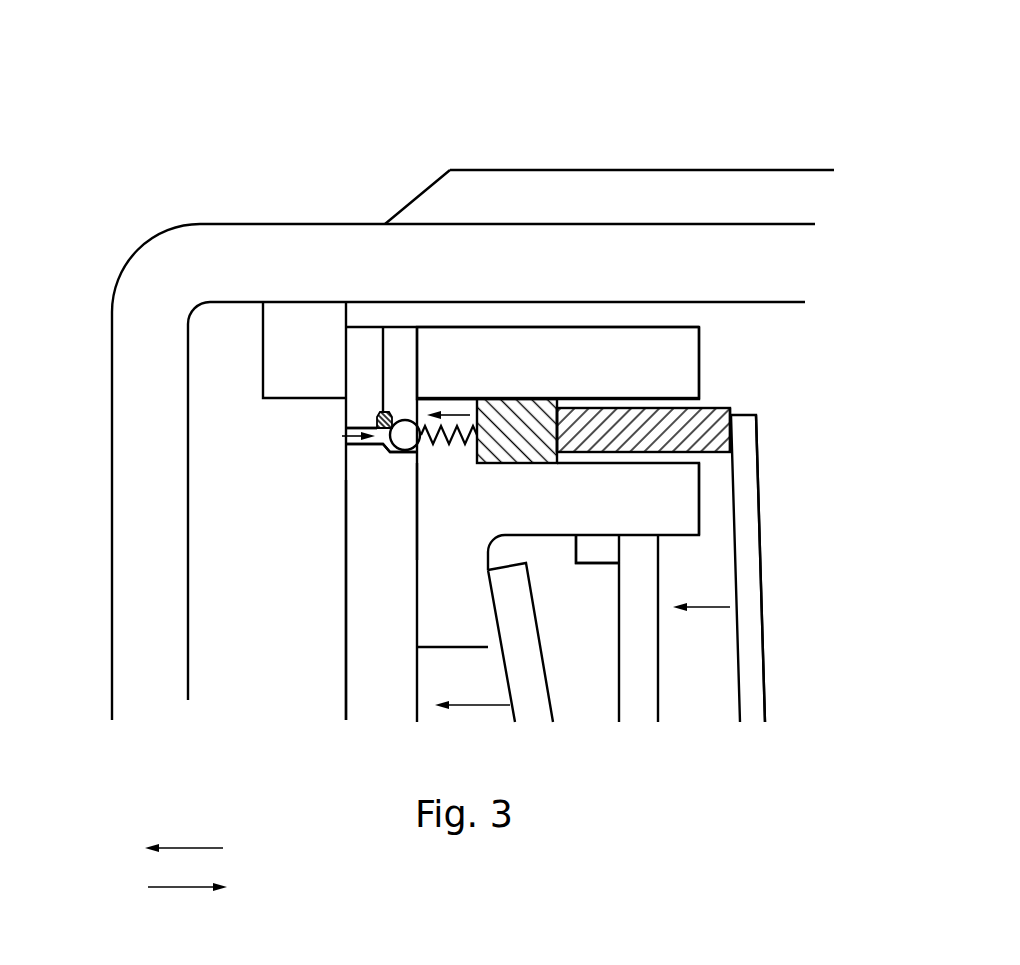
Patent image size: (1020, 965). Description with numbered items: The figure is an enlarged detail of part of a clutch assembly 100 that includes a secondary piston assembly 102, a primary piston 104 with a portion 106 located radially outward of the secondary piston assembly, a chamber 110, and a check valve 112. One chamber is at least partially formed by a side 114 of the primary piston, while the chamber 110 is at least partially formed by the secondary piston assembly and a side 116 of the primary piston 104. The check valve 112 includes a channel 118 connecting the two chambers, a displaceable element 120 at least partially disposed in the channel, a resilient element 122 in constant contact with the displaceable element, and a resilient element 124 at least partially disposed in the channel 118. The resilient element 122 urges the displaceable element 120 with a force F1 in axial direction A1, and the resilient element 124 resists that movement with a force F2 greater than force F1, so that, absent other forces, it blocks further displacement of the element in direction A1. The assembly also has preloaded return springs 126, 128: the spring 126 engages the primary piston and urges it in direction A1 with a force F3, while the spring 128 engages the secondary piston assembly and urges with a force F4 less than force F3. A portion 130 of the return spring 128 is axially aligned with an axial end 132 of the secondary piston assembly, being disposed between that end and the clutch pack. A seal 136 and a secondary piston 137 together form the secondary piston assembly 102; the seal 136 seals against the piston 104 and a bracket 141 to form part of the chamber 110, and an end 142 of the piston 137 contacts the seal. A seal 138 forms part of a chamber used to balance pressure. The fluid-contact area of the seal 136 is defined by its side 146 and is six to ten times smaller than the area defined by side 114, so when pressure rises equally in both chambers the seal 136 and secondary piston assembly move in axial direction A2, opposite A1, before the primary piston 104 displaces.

The clutch assembly 100 is at (807, 104).
The secondary piston assembly 102 is at (648, 389).
The primary piston 104 is at (331, 558).
The portion of primary piston 106 is at (543, 355).
The chamber 110 is at (453, 413).
The check valve 112 is at (370, 453).
The side of primary piston 114 is at (343, 625).
The side of primary piston 116 is at (418, 478).
The channel 118 is at (378, 414).
The displaceable element 120 is at (387, 412).
The resilient element 122 is at (448, 437).
The resilient element 124 is at (353, 427).
The return spring 126 is at (535, 700).
The return spring 128 is at (775, 600).
The portion of return spring 130 is at (747, 418).
The axial end of secondary piston assembly 132 is at (743, 422).
The seal 136 is at (508, 418).
The secondary piston 137 is at (713, 410).
The seal 138 is at (593, 552).
The bracket 141 is at (698, 522).
The end of secondary piston 142 is at (558, 428).
The side of seal 146 is at (468, 405).
The force F1 is at (405, 435).
The force F2 is at (345, 433).
The force F3 is at (487, 705).
The force F4 is at (723, 607).
The axial direction A1 is at (196, 846).
The axial direction A2 is at (172, 888).